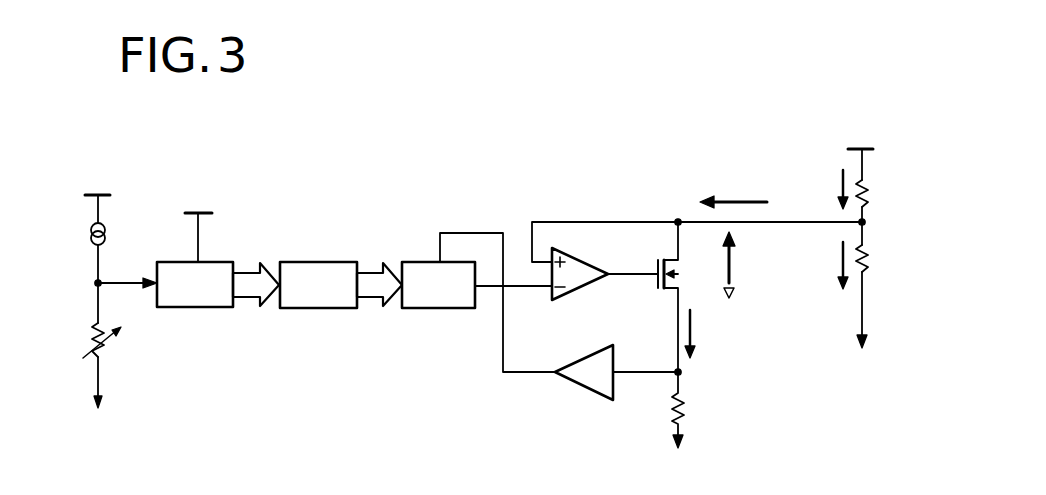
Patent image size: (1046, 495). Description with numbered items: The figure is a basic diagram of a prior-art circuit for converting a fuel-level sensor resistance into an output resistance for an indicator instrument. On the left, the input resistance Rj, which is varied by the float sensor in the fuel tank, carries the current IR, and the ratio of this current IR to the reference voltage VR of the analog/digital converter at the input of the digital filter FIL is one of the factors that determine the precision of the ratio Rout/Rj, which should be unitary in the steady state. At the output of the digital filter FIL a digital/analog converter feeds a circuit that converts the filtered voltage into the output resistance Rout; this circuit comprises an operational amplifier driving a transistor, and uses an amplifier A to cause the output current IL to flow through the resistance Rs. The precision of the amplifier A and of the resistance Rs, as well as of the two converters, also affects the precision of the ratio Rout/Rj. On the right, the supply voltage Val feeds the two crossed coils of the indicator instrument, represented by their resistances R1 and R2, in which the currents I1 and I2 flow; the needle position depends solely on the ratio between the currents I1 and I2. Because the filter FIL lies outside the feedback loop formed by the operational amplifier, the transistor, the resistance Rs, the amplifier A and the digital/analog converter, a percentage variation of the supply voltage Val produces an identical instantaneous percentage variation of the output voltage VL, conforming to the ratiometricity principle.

The current IR is at (78, 250).
The resistance Rj is at (93, 328).
The reference voltage VR is at (203, 208).
The digital filter FIL is at (317, 260).
The amplifier A is at (578, 387).
The output resistance Rout is at (730, 198).
The output voltage VL is at (732, 263).
The output current IL is at (693, 325).
The resistance Rs is at (693, 408).
The supply voltage Val is at (860, 143).
The coil resistance R1 is at (867, 197).
The coil resistance R2 is at (867, 257).
The current I1 is at (840, 170).
The current I2 is at (838, 262).